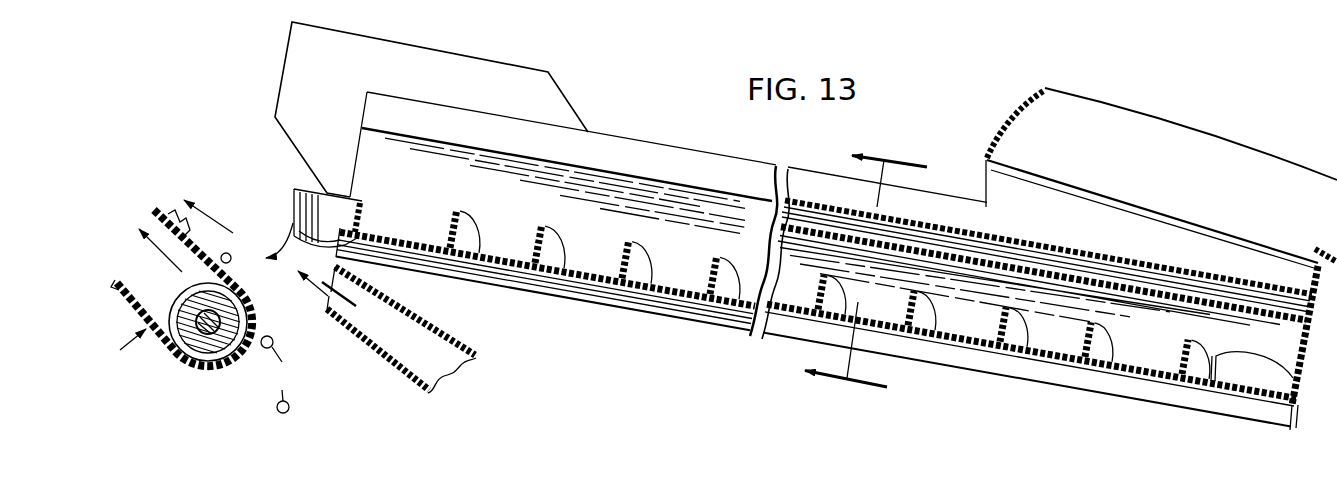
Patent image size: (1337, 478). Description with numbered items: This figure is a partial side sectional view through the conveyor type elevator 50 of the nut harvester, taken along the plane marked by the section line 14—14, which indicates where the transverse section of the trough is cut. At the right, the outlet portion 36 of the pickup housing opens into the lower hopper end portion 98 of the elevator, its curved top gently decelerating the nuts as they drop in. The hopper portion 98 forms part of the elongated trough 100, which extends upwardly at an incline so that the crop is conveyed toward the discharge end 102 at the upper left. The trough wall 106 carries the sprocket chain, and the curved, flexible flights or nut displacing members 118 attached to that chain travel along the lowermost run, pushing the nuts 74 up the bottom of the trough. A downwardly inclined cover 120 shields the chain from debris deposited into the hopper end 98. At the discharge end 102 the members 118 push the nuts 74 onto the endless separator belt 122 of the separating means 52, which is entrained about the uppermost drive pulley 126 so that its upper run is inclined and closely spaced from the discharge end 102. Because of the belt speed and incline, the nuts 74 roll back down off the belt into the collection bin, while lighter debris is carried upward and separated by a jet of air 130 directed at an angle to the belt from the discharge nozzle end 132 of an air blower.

The section line 14— 14 is at (847, 266).
The outlet portion 36 is at (1070, 112).
The conveyor type elevator 50 is at (621, 156).
The separating means 52 is at (181, 293).
The nuts 74 is at (279, 374).
The lower hopper end portion 98 is at (1147, 384).
The elongated trough 100 is at (991, 360).
The discharge end 102 is at (360, 148).
The trough wall 106 is at (1053, 373).
The flights or nut displacing members 118 is at (300, 194).
The downwardly inclined cover 120 is at (935, 223).
The endless separator belt 122 is at (152, 212).
The uppermost drive pulley 126 is at (222, 338).
The jet of air 130 is at (313, 296).
The discharge nozzle end 132 is at (395, 342).